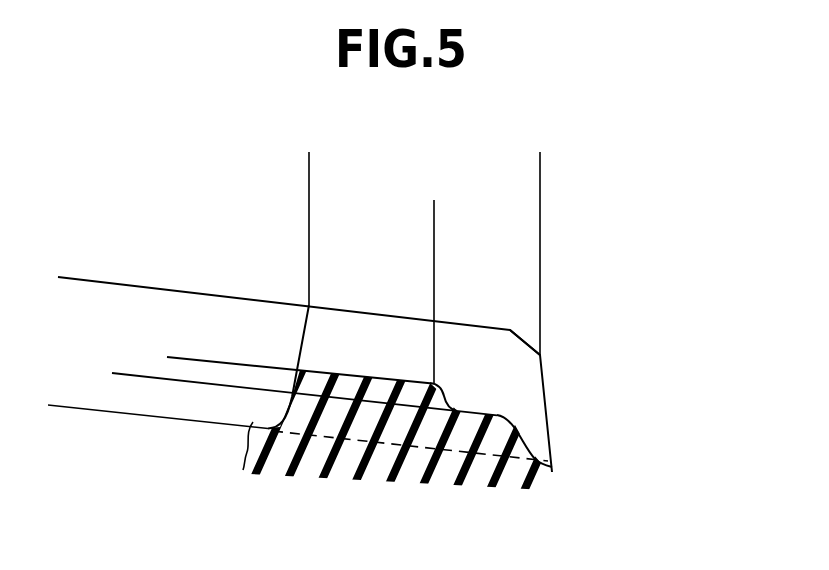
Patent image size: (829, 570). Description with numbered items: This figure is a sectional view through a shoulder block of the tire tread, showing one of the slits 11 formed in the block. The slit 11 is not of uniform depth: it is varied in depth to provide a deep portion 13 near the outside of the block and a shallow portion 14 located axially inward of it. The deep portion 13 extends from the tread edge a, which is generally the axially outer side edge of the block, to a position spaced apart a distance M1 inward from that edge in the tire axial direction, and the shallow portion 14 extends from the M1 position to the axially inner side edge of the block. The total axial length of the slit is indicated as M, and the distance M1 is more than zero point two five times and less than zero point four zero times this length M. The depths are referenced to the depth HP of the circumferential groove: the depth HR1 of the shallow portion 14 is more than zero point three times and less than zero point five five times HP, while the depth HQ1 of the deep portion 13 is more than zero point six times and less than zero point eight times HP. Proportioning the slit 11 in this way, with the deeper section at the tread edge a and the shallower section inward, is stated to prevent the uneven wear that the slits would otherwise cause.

The slit 11 is at (536, 380).
The deep portion 13 is at (473, 390).
The shallow portion 14 is at (358, 347).
The tread edge a is at (552, 346).
The total axial length of the slit M is at (540, 160).
The axial distance of the deep portion M1 is at (540, 210).
The depth of the circumferential groove HP is at (68, 404).
The depth of the deep portion HQ1 is at (128, 290).
The depth of the shallow portion HR1 is at (182, 295).